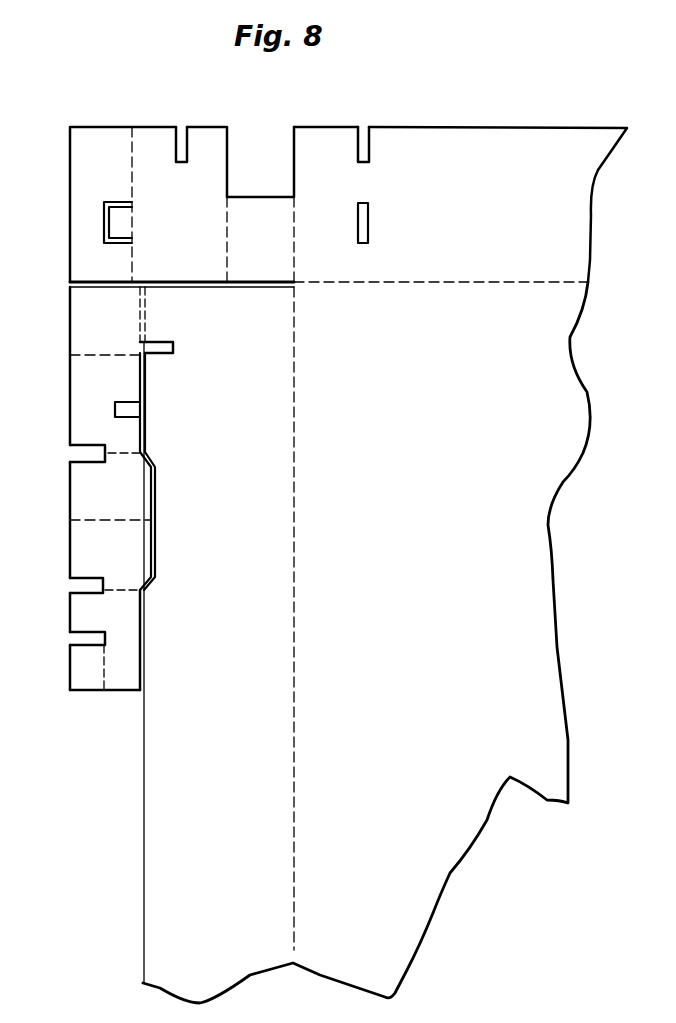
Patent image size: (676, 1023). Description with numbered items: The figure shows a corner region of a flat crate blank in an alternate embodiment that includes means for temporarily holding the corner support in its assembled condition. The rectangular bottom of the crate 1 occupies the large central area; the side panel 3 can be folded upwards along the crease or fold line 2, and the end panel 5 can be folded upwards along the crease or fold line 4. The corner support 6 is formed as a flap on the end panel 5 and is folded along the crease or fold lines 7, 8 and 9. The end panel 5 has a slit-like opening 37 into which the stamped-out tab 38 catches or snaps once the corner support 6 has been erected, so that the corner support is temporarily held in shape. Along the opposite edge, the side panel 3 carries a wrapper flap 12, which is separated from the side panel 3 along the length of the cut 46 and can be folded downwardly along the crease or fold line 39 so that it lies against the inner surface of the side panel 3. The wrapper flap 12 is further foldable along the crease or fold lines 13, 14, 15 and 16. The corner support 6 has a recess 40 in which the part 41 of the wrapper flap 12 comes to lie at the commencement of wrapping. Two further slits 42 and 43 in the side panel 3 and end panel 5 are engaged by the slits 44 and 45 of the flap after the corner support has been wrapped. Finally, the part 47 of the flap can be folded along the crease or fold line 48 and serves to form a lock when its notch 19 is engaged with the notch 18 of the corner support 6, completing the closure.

The bottom of the crate 1 is at (490, 362).
The crease or fold line 2 is at (293, 792).
The side panel 3 is at (162, 743).
The crease or fold line 4 is at (352, 282).
The end panel 5 is at (575, 218).
The corner support 6 is at (158, 160).
The crease or fold line 7 is at (132, 155).
The crease or fold line 8 is at (227, 220).
The crease or fold line 9 is at (293, 223).
The wrapper flap 12 is at (68, 402).
The crease or fold line 13 is at (78, 355).
The crease or fold line 14 is at (118, 453).
The crease or fold line 15 is at (130, 522).
The crease or fold line 16 is at (120, 592).
The notch 18 is at (182, 142).
The notch 19 is at (72, 638).
The slit-like opening 37 is at (365, 217).
The stamped-out tab 38 is at (115, 221).
The crease or fold line 39 is at (140, 315).
The recess 40 is at (272, 140).
The part of the flap 41 is at (85, 323).
The slit 42 is at (362, 140).
The slit 43 is at (162, 350).
The slit 44 is at (80, 450).
The slit 45 is at (80, 586).
The cut 46 is at (142, 623).
The part 47 is at (75, 677).
The crease or fold line 48 is at (104, 677).